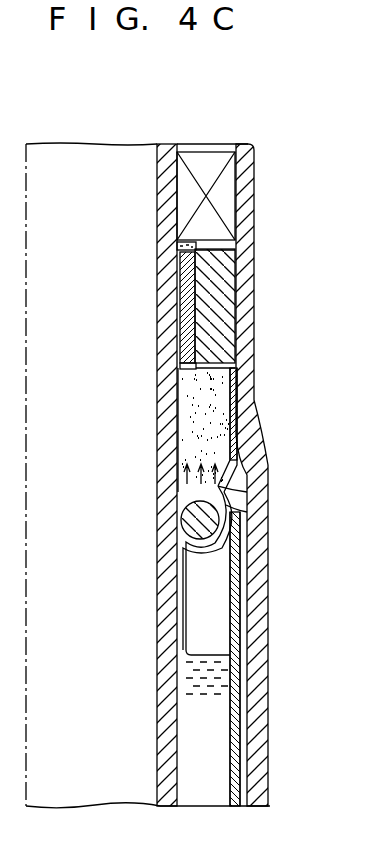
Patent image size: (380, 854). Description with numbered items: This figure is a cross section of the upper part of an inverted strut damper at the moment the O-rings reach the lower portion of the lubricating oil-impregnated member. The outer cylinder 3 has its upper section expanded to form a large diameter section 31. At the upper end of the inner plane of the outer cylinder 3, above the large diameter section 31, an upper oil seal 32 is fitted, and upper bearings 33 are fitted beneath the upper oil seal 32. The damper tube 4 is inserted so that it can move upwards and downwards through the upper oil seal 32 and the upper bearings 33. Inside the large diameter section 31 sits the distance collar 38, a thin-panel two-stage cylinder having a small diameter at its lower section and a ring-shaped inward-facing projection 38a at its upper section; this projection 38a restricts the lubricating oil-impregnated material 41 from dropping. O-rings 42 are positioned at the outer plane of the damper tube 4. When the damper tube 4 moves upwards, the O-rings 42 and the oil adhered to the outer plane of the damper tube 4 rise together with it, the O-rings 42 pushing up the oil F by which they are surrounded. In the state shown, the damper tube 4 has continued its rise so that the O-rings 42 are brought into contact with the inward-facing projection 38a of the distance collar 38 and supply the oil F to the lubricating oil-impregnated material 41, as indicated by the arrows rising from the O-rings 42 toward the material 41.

The outer cylinder 3 is at (262, 434).
The damper tube 4 is at (155, 190).
The large diameter section 31 is at (262, 618).
The upper oil seal 32 is at (227, 210).
The upper bearings 33 is at (240, 307).
The distance collar 38 is at (268, 587).
The inward-facing projection 38a is at (247, 490).
The lubricating oil-impregnated material 41 is at (228, 383).
The O-rings 42 is at (235, 515).
The oil F is at (228, 692).